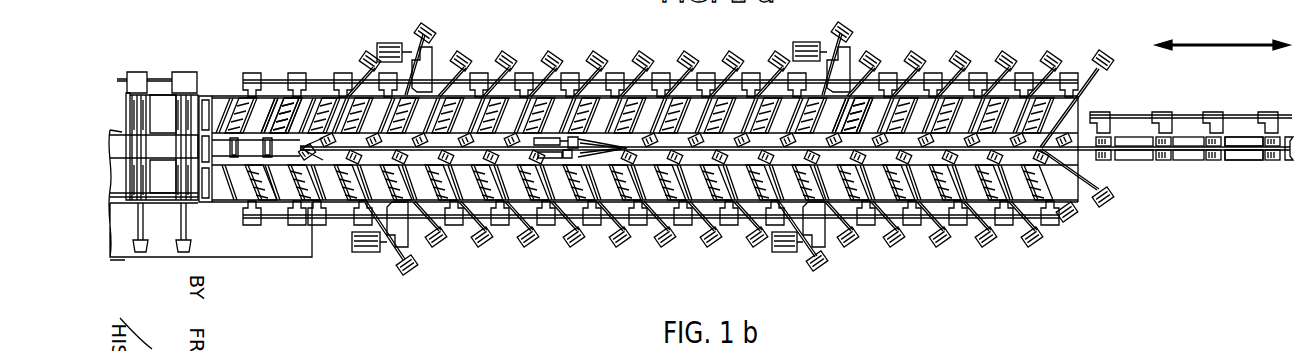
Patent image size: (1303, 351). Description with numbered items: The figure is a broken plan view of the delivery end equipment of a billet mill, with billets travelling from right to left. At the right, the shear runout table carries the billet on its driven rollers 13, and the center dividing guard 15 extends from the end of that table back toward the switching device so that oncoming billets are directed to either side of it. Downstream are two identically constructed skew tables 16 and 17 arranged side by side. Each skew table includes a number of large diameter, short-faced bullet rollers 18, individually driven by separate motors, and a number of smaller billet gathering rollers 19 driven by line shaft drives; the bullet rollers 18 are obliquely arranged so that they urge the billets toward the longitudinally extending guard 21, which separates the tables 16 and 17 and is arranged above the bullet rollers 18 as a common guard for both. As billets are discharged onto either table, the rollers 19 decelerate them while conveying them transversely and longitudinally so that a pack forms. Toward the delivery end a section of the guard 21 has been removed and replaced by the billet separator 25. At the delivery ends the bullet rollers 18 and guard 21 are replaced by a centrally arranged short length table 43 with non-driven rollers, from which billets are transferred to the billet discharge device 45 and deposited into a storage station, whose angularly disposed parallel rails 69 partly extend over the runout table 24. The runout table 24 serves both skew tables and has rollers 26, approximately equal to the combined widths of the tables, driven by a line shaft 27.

The driven rollers 13 is at (1213, 159).
The center dividing guard 15 is at (1248, 158).
The skew table 16 is at (912, 234).
The skew table 17 is at (897, 60).
The bullet rollers 18 is at (463, 137).
The billet gathering rollers 19 is at (512, 98).
The longitudinally extending guard 21 is at (446, 137).
The runout table 24 is at (170, 68).
The billet separator 25 is at (602, 135).
The rollers 26 is at (176, 131).
The line shaft 27 is at (150, 74).
The short length table 43 is at (283, 132).
The billet discharge device 45 is at (123, 133).
The rails 69 is at (183, 245).